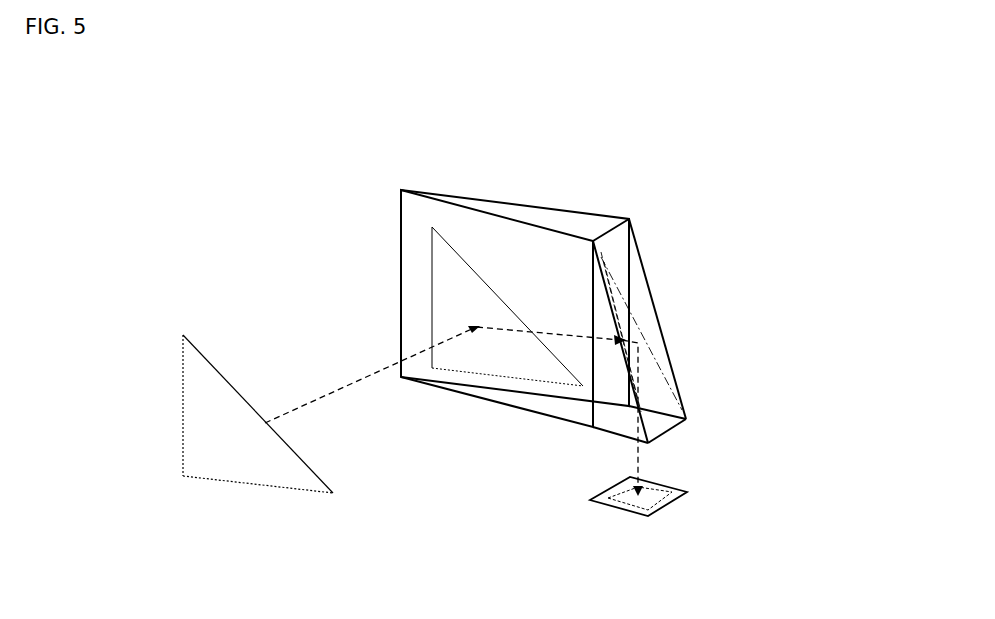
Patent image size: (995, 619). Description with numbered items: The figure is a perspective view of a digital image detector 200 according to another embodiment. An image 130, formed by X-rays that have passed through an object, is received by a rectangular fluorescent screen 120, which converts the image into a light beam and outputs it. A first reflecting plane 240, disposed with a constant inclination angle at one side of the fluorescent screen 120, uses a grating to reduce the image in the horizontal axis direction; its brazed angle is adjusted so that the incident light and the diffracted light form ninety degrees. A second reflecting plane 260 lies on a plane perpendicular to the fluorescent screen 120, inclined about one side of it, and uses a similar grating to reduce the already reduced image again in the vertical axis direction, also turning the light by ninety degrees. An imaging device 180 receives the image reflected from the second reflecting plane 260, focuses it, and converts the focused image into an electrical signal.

The digital image detector 200 is at (747, 156).
The first reflecting plane 240 is at (535, 203).
The second reflecting plane 260 is at (648, 301).
The fluorescent screen 120 is at (407, 218).
The image 130 is at (250, 470).
The imaging device 180 is at (658, 487).